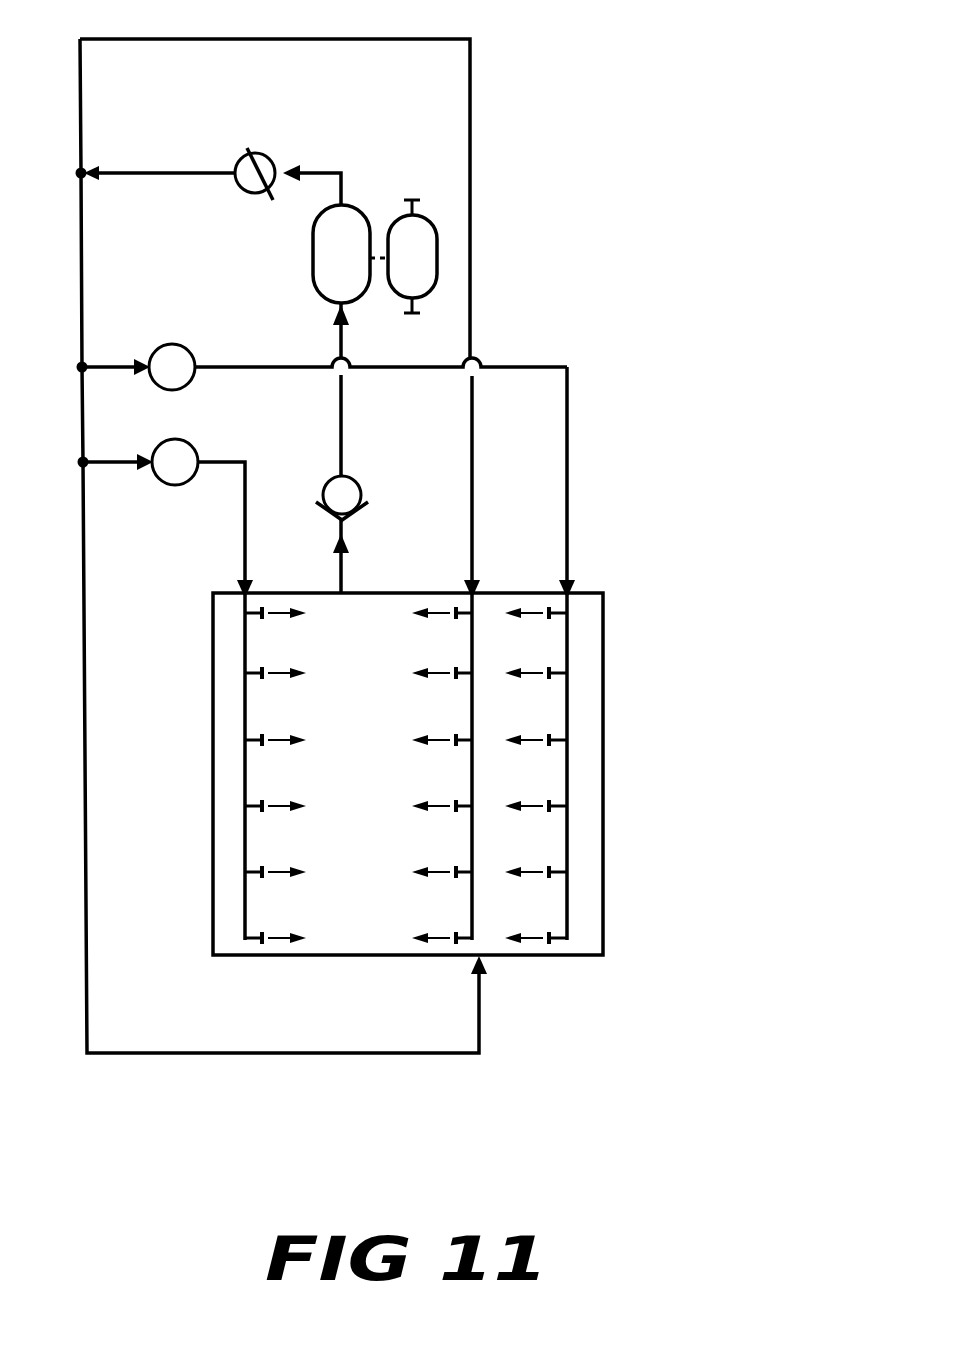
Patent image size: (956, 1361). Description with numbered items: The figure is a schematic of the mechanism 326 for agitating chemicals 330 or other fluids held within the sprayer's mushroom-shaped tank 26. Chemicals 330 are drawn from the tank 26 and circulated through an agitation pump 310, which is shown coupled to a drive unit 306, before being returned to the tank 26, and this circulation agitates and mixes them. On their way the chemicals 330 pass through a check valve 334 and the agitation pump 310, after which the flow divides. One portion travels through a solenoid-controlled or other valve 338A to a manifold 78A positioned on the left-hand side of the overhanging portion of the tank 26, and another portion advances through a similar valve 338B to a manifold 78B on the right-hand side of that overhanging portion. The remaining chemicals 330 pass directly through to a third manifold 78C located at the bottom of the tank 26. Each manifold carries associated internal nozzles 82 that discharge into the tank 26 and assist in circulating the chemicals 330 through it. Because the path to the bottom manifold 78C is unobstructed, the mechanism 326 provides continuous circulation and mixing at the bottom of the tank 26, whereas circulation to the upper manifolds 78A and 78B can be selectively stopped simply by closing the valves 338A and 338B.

The mechanism 326 is at (572, 68).
The motor 306 is at (393, 220).
The agitation pump 310 is at (313, 289).
The valve 338B is at (190, 346).
The valve 338A is at (193, 446).
The check valve 334 is at (354, 479).
The chemicals 330 is at (346, 568).
The manifold 78C is at (472, 604).
The manifold 78A is at (248, 862).
The manifold 78B is at (572, 889).
The internal nozzles 82 is at (263, 622).
The tank 26 is at (372, 883).